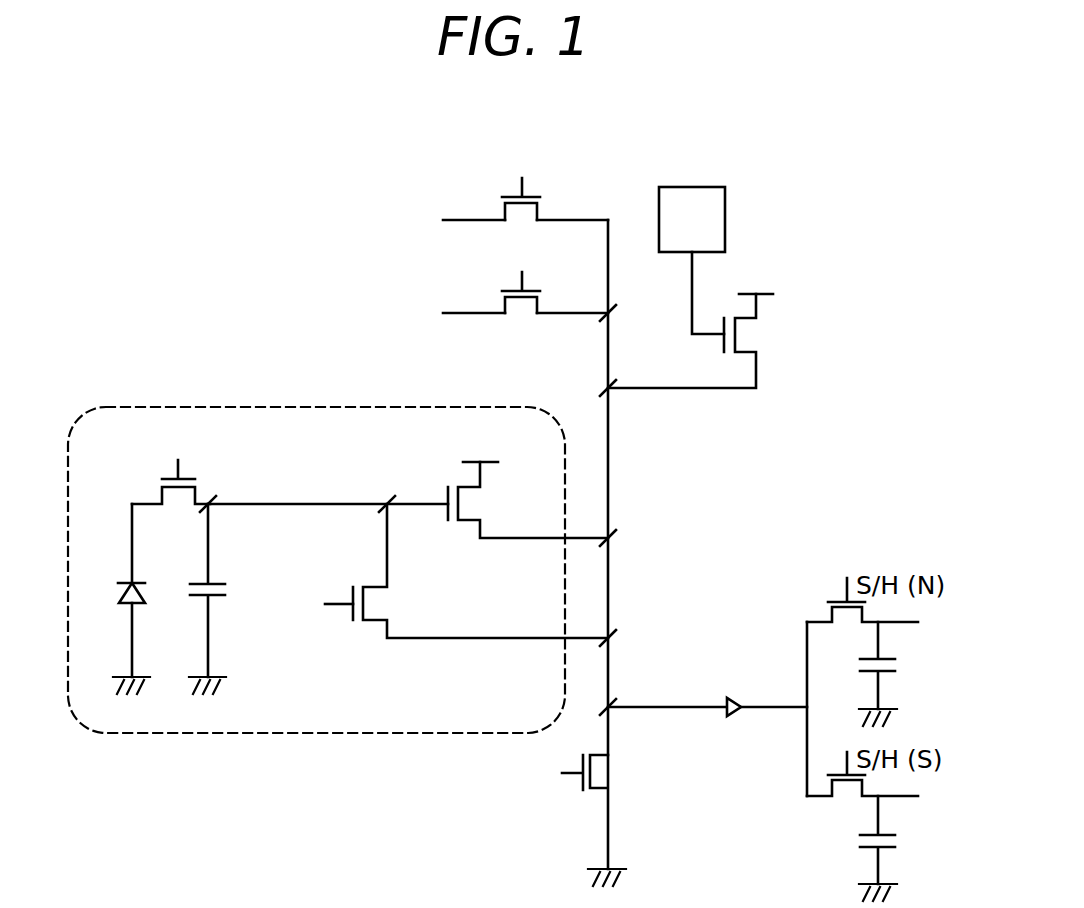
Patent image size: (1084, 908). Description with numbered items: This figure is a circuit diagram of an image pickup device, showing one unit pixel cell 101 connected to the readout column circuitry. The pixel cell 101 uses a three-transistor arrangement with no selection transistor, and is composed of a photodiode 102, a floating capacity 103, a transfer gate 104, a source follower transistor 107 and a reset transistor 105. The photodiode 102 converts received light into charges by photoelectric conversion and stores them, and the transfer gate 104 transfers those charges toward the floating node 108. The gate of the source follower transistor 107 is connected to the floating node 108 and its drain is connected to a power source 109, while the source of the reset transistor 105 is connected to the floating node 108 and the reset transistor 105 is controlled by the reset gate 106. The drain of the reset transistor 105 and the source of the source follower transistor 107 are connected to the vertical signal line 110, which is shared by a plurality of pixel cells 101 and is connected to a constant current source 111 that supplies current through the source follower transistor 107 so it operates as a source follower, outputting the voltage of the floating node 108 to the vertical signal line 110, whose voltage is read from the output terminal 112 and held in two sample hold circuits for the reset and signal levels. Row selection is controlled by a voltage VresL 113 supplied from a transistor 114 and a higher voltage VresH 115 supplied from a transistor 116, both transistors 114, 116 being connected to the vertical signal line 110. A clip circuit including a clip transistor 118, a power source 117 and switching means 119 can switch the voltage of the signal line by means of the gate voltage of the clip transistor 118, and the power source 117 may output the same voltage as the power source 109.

The unit pixel cell 101 is at (424, 407).
The photodiode 102 is at (138, 583).
The floating capacity 103 is at (212, 584).
The transfer gate 104 is at (171, 467).
The reset transistor 105 is at (383, 605).
The reset gate 106 is at (317, 605).
The source follower transistor 107 is at (473, 503).
The floating node 108 is at (277, 504).
The power source 109 is at (480, 447).
The vertical signal line 110 is at (609, 585).
The constant current source 111 is at (572, 820).
The output terminal 112 is at (733, 697).
The voltage VresL 113 is at (500, 314).
The transistor 114 is at (521, 277).
The voltage VresH 115 is at (500, 221).
The transistor 116 is at (521, 183).
The power source 117 is at (756, 279).
The clip transistor 118 is at (750, 334).
The switching means 119 is at (692, 260).